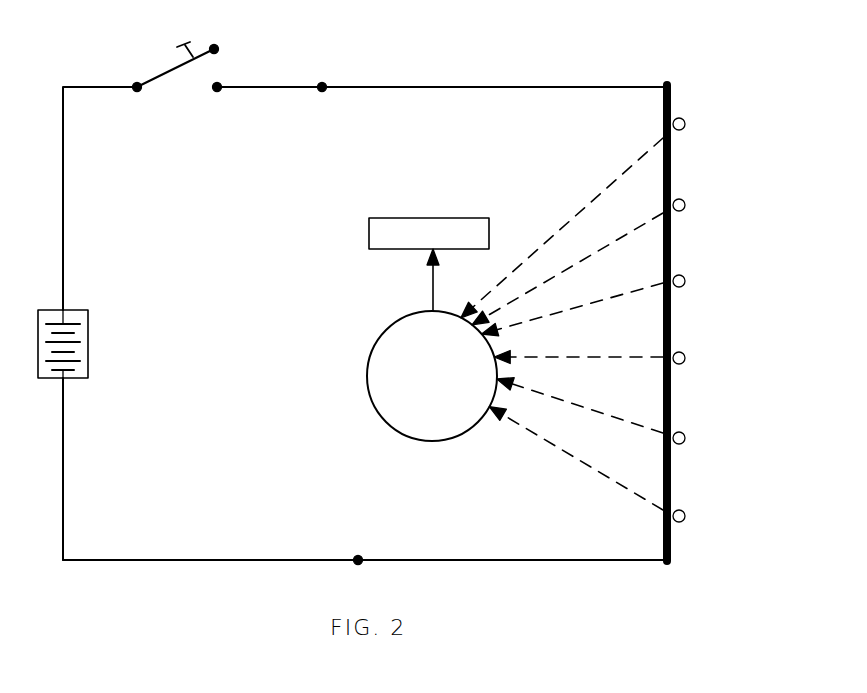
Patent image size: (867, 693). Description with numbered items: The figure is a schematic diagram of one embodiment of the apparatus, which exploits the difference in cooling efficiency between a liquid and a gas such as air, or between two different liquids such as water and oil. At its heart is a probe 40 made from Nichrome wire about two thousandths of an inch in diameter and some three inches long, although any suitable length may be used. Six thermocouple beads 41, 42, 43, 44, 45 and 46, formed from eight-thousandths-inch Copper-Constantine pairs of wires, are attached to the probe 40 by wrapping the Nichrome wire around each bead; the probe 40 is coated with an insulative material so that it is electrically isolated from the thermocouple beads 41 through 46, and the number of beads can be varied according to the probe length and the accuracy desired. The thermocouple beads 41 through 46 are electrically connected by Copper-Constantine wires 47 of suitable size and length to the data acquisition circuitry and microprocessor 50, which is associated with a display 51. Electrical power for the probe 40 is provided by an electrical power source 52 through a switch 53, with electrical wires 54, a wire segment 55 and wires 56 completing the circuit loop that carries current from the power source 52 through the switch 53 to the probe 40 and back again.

The probe 40 is at (672, 101).
The thermocouple bead 41 is at (685, 129).
The thermocouple bead 42 is at (685, 210).
The thermocouple bead 43 is at (685, 286).
The thermocouple bead 44 is at (685, 363).
The thermocouple bead 45 is at (685, 443).
The thermocouple bead 46 is at (685, 521).
The Copper-Constantine wires 47 is at (579, 213).
The data acquisition circuitry and microprocessor 50 is at (366, 370).
The display 51 is at (418, 218).
The electrical power source 52 is at (89, 342).
The switch 53 is at (163, 73).
The electrical wires 54 is at (65, 195).
The conductor wire 55 is at (275, 86).
The wires 56 is at (491, 86).